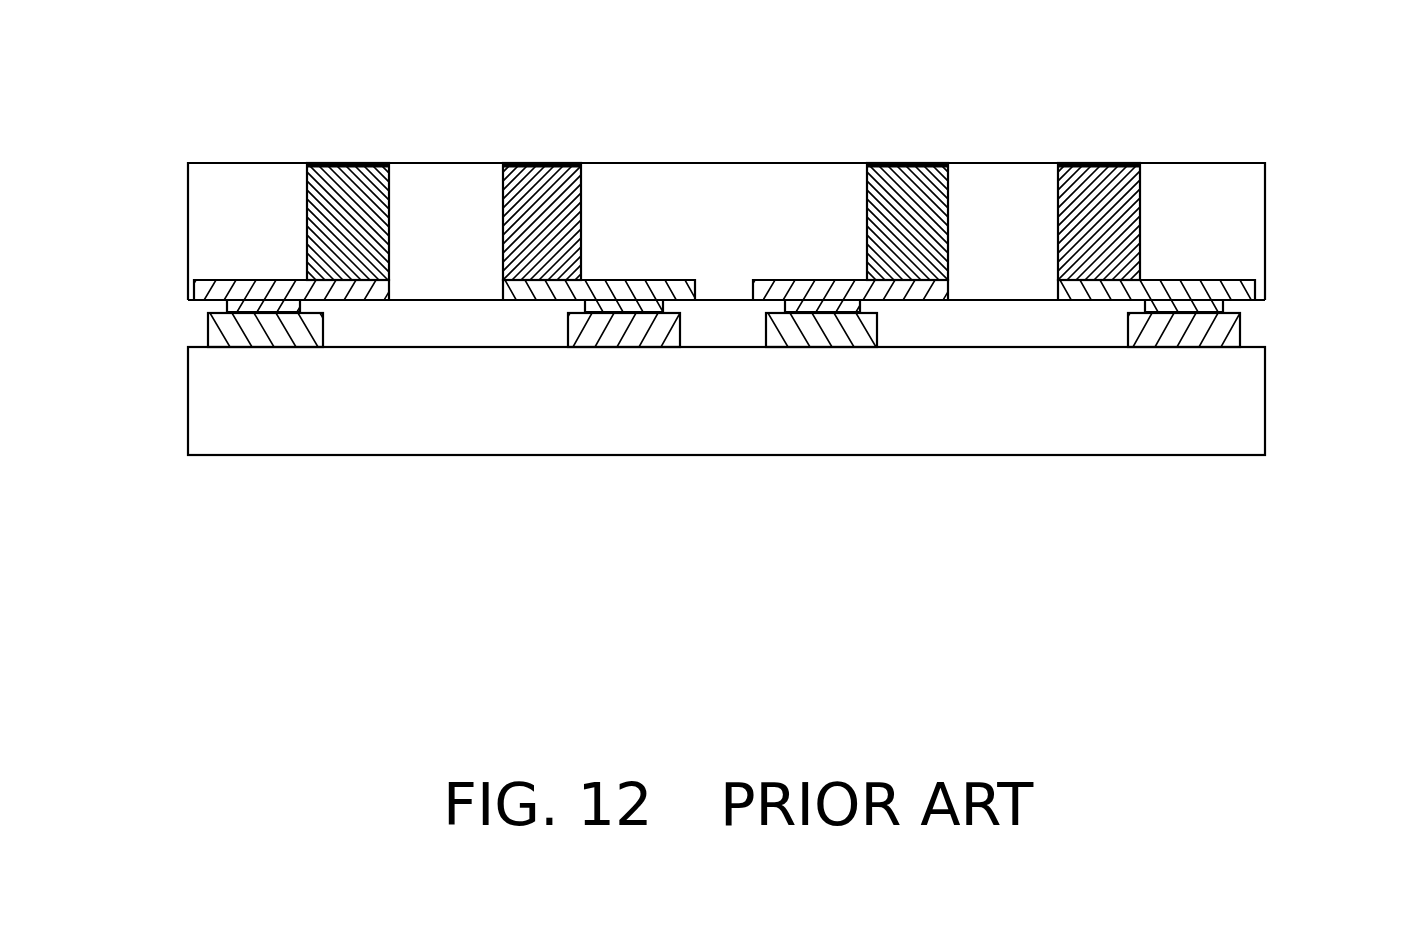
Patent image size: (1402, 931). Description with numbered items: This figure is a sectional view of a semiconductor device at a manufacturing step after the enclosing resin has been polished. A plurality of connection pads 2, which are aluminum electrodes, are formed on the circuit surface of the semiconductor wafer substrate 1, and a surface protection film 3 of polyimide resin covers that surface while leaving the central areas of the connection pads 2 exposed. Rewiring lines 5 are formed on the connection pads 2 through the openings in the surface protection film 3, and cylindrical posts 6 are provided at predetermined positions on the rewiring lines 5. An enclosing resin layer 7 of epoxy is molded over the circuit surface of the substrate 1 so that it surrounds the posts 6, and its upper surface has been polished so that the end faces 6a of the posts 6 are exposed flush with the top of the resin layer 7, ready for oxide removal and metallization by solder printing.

The semiconductor wafer substrate 1 is at (469, 412).
The connection pad 2 is at (278, 345).
The surface protection film 3 is at (205, 322).
The rewiring line 5 is at (230, 280).
The post 6 is at (305, 208).
The end face 6a is at (345, 163).
The enclosing resin layer 7 is at (207, 230).